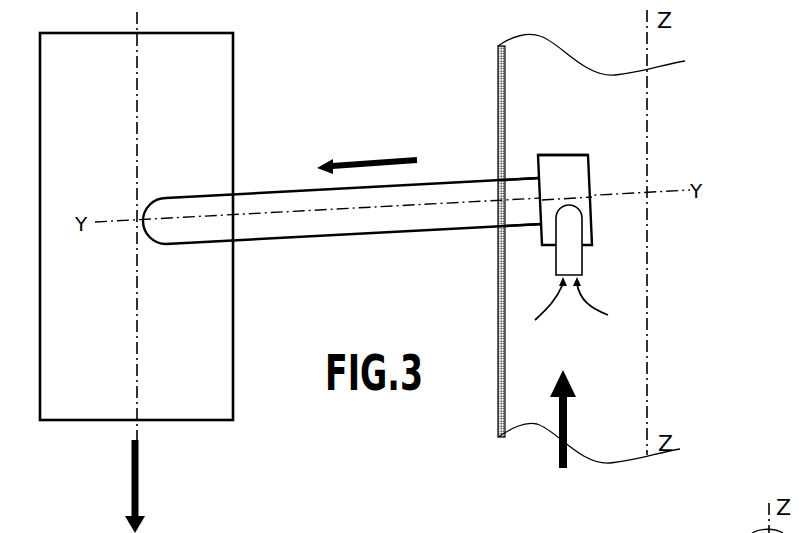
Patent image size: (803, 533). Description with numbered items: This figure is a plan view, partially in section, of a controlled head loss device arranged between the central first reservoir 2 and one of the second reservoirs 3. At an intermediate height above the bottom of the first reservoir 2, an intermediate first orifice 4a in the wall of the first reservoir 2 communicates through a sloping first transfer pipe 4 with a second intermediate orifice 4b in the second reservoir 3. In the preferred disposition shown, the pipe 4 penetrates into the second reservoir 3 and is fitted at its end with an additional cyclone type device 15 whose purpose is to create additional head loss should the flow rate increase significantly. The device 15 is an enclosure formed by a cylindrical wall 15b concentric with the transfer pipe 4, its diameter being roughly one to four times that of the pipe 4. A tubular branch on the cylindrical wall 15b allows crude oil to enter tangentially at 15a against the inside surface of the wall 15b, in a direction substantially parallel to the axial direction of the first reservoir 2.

The central first reservoir 2 is at (497, 122).
The second reservoir 3 is at (233, 92).
The first transfer pipe 4 is at (338, 222).
The intermediate first orifice 4a is at (520, 180).
The second intermediate orifice 4b is at (158, 213).
The cyclone type device 15 is at (592, 192).
The tangential entry 15a is at (565, 253).
The cylindrical wall 15b is at (572, 168).